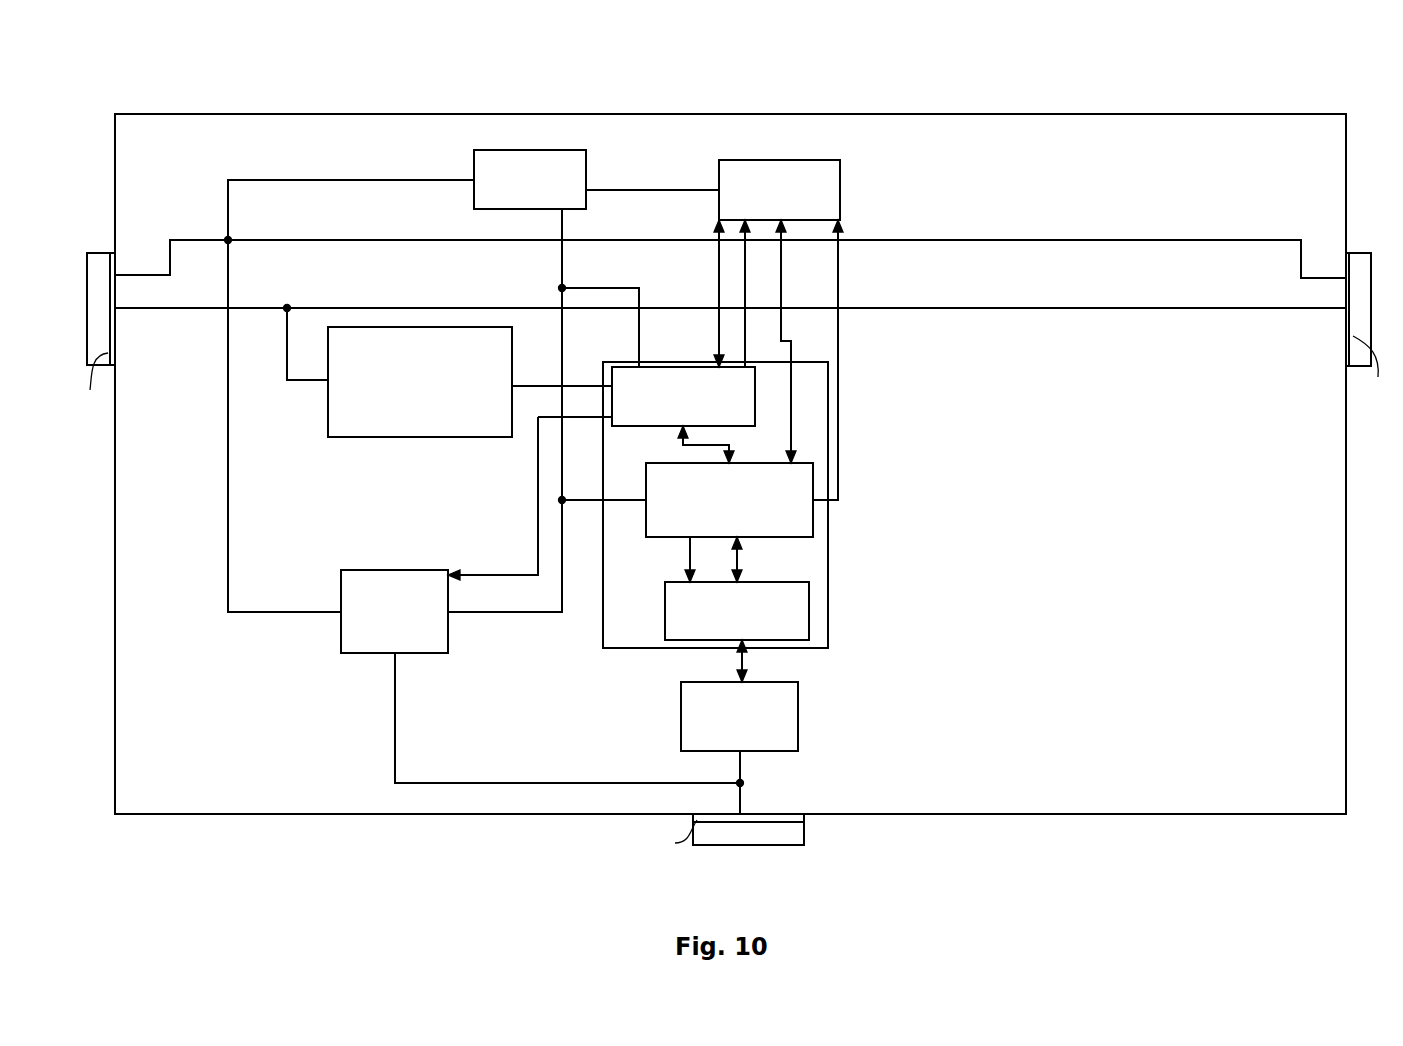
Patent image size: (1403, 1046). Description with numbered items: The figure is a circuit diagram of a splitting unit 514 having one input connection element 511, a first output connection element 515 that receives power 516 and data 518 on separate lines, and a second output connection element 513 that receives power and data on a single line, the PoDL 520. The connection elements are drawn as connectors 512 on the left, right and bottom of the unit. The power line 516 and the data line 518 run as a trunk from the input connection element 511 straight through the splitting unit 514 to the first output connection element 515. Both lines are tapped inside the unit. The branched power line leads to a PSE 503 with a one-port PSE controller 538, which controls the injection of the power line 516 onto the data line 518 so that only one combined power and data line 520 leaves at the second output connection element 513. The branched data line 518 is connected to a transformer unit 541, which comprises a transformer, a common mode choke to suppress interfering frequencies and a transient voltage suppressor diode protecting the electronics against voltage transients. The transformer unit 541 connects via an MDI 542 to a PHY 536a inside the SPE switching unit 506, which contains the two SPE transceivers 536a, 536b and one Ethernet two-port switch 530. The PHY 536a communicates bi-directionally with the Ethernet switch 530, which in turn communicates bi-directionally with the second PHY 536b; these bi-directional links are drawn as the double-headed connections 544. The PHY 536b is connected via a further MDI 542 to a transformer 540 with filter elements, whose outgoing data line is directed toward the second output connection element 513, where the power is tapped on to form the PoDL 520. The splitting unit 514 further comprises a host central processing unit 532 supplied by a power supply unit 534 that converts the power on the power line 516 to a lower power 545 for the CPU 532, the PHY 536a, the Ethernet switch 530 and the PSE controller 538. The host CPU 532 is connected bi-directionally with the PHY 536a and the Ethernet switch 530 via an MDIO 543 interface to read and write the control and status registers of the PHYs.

The splitting unit 514 is at (127, 80).
The connector 512 is at (93, 260).
The input connection element 511 is at (93, 388).
The first output connection element 515 is at (1377, 373).
The second output connection element 513 is at (661, 840).
The power line 516 is at (1033, 240).
The data line 518 is at (1108, 310).
The PoDL 520 is at (743, 802).
The power supply unit 534 is at (485, 167).
The power 545 is at (653, 190).
The host central processing unit 532 is at (830, 178).
The MDI 542 is at (533, 385).
The MDIO interface 543 is at (720, 288).
The data bus 544 is at (690, 446).
The transformer unit 541 is at (367, 425).
The SPE switching unit 506 is at (828, 465).
The PHY 536a is at (700, 382).
The Ethernet 2-port switch 530 is at (797, 517).
The PHY 536b is at (798, 612).
The transformer 540 is at (790, 730).
The PSE 503 is at (420, 642).
The 1-port PSE controller 538 is at (425, 642).